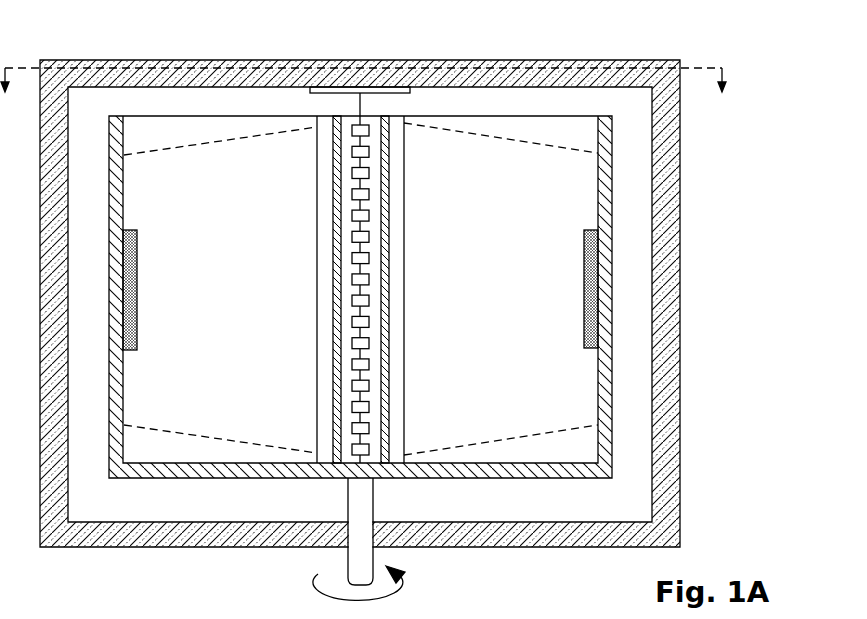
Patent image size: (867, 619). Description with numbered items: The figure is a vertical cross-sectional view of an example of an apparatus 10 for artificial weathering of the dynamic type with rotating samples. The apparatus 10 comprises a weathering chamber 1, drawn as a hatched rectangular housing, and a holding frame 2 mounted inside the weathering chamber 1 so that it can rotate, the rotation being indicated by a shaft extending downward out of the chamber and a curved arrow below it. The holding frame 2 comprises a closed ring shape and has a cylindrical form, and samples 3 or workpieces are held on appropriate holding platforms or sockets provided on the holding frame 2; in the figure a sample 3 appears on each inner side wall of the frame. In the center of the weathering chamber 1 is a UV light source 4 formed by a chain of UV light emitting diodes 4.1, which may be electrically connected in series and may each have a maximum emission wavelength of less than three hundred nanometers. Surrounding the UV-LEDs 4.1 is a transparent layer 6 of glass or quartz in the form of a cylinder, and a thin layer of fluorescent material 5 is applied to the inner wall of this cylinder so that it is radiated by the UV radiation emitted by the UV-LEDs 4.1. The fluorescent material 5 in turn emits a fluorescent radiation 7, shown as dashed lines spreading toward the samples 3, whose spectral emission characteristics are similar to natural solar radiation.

The apparatus 10 is at (91, 25).
The weathering chamber 1 is at (680, 362).
The holding frame 2 is at (598, 172).
The samples 3 is at (137, 312).
The UV light source 4 is at (399, 275).
The UV light emitting diodes 4.1 is at (369, 196).
The fluorescent material 5 is at (335, 190).
The transparent layer 6 is at (325, 348).
The fluorescent radiation 7 is at (172, 152).